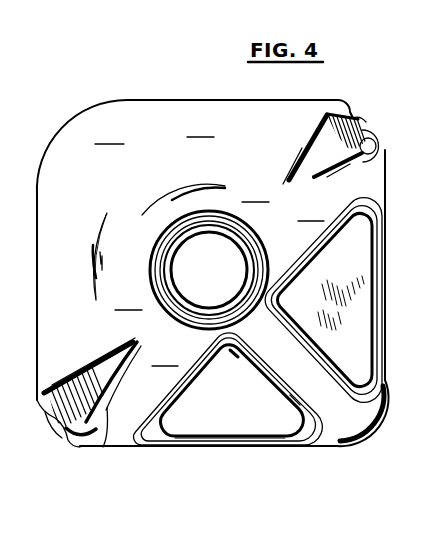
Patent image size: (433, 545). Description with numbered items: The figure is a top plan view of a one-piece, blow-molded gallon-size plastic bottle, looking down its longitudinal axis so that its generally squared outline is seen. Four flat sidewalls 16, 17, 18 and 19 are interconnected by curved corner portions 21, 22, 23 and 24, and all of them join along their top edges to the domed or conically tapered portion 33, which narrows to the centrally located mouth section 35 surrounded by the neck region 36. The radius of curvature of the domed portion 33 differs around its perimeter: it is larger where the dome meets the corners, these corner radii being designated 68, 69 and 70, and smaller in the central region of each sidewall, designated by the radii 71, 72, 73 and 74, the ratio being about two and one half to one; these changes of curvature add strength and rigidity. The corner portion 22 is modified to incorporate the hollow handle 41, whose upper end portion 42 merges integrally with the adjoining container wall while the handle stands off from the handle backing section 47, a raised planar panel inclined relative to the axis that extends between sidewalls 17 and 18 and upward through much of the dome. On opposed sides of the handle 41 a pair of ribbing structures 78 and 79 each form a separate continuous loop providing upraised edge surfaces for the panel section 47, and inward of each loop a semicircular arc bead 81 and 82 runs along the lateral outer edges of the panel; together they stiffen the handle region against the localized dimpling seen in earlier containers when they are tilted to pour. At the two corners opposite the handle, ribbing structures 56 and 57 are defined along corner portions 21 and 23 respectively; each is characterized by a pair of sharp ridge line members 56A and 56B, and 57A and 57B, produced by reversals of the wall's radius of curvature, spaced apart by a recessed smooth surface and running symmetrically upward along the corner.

The flat sidewall 16 is at (37, 278).
The flat sidewall 17 is at (237, 450).
The flat sidewall 18 is at (385, 296).
The flat sidewall 19 is at (225, 97).
The curved corner portion 21 is at (63, 432).
The curved corner portion 22 is at (360, 430).
The curved corner portion 23 is at (380, 140).
The curved corner portion 24 is at (56, 138).
The domed or conically tapered portion 33 is at (116, 272).
The mouth section 35 is at (220, 243).
The neck region 36 is at (190, 223).
The hollow handle 41 is at (317, 377).
The upper end portion of handle 42 is at (257, 353).
The handle backing section 47 is at (182, 402).
The ribbing structure 56 is at (70, 390).
The ridge line member 56A is at (97, 352).
The ridge line member 56B is at (104, 446).
The ribbing structure 57 is at (339, 119).
The ridge line member 57A is at (310, 137).
The ridge line member 57B is at (383, 142).
The radius of curvature of domed portion at corner portion 68 is at (109, 132).
The radius of curvature of domed portion at corner portion 69 is at (128, 298).
The radius of curvature of domed portion at corner portion 70 is at (255, 190).
The radius of curvature of domed portion at sidewall 71 is at (200, 125).
The radius of curvature of domed portion at sidewall 72 is at (59, 262).
The radius of curvature of domed portion at sidewall 73 is at (165, 355).
The radius of curvature of domed portion at sidewall 74 is at (311, 210).
The ribbing structure 78 is at (336, 232).
The ribbing structure 79 is at (153, 391).
The semi-circular length arc bead 81 is at (304, 274).
The semi-circular length arc bead 82 is at (192, 380).